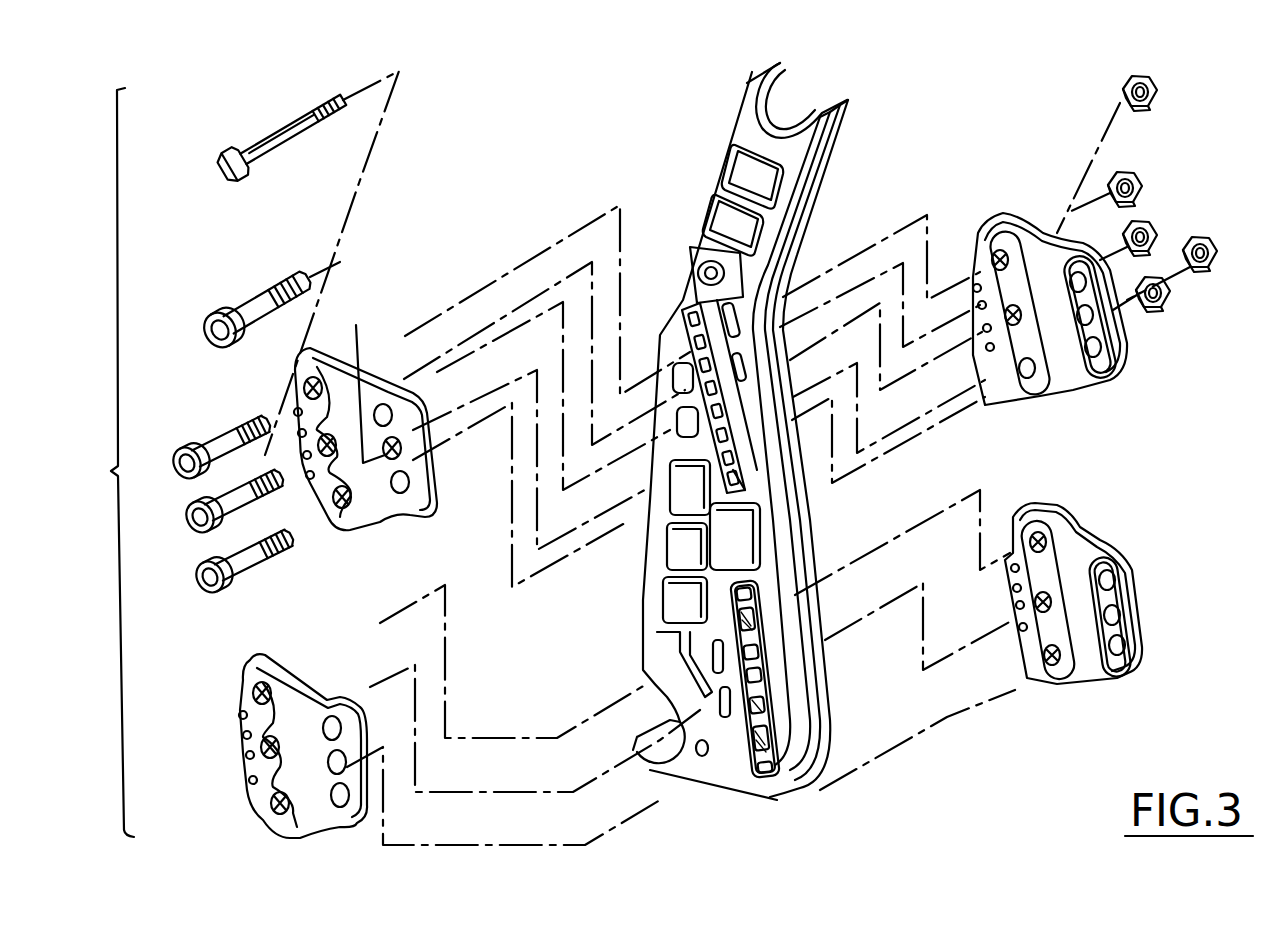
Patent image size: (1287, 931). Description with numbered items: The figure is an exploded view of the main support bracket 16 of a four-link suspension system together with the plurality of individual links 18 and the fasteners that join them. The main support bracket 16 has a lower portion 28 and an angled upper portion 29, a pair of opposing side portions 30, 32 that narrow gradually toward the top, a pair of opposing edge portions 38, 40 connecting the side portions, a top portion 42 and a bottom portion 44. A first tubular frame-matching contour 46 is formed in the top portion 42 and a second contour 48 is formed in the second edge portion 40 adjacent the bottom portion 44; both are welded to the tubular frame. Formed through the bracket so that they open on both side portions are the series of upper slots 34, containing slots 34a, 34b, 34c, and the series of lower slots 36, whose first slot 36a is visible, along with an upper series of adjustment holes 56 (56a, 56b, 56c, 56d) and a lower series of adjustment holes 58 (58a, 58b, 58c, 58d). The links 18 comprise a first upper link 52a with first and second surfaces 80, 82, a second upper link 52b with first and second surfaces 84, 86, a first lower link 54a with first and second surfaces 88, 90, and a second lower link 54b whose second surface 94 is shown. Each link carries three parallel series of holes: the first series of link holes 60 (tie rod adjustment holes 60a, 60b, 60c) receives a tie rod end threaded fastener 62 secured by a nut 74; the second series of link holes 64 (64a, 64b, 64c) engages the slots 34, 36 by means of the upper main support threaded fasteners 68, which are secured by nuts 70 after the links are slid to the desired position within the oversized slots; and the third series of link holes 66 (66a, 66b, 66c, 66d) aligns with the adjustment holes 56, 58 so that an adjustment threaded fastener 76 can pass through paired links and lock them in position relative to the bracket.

The main support bracket 16 is at (747, 441).
The links 18 is at (721, 495).
The lower portion 28 is at (814, 466).
The upper portion 29 is at (722, 435).
The first opposing side portion 30 is at (797, 150).
The second opposing side portion 32 is at (853, 107).
The series of upper slots 34 is at (690, 293).
The upper slot 34a is at (717, 317).
The upper slot 34b is at (717, 450).
The upper slot 34c is at (740, 470).
The series of lower slots 36 is at (796, 712).
The lower slot 36a is at (757, 607).
The first edge portion 38 is at (790, 538).
The second edge portion 40 is at (650, 563).
The top portion 42 is at (797, 110).
The bottom portion 44 is at (723, 795).
The first frame-matching contour 46 is at (768, 66).
The second frame-matching contour 48 is at (660, 767).
The first upper link 52a is at (366, 396).
The second upper link 52b is at (1050, 278).
The first lower link 54a is at (310, 716).
The second lower link 54b is at (1100, 575).
The upper series of adjustment holes 56 is at (749, 364).
The upper adjustment hole 56a is at (687, 303).
The upper adjustment hole 56b is at (687, 387).
The upper adjustment hole 56c is at (683, 437).
The upper adjustment hole 56d is at (747, 463).
The lower series of adjustment holes 58 is at (753, 623).
The lower adjustment hole 58a is at (713, 643).
The lower adjustment hole 58b is at (727, 670).
The lower adjustment hole 58c is at (760, 690).
The lower adjustment hole 58d is at (747, 693).
The first series of link holes 60 is at (386, 500).
The tie rod adjustment hole 60a is at (1088, 290).
The tie rod adjustment hole 60b is at (1093, 320).
The tie rod adjustment hole 60c is at (1101, 352).
The tie rod end threaded fastener 62 is at (258, 293).
The second series of link holes 64 is at (304, 368).
The link hole 64a is at (990, 247).
The link hole 64b is at (1072, 400).
The link hole 64c is at (1027, 385).
The third series of link holes 66 is at (281, 400).
The link hole 66a is at (240, 714).
The link hole 66b is at (243, 735).
The link hole 66c is at (246, 756).
The link hole 66d is at (249, 780).
The upper main support threaded fasteners 68 is at (215, 433).
The nut 70 is at (1160, 278).
The nut 74 is at (1210, 236).
The adjustment threaded fastener 76 is at (279, 135).
The first surface 80 is at (397, 333).
The second surface 82 is at (342, 418).
The first surface 84 is at (1030, 243).
The second surface 86 is at (1056, 230).
The first surface 88 is at (318, 673).
The second surface 90 is at (318, 754).
The second surface 94 is at (1133, 560).